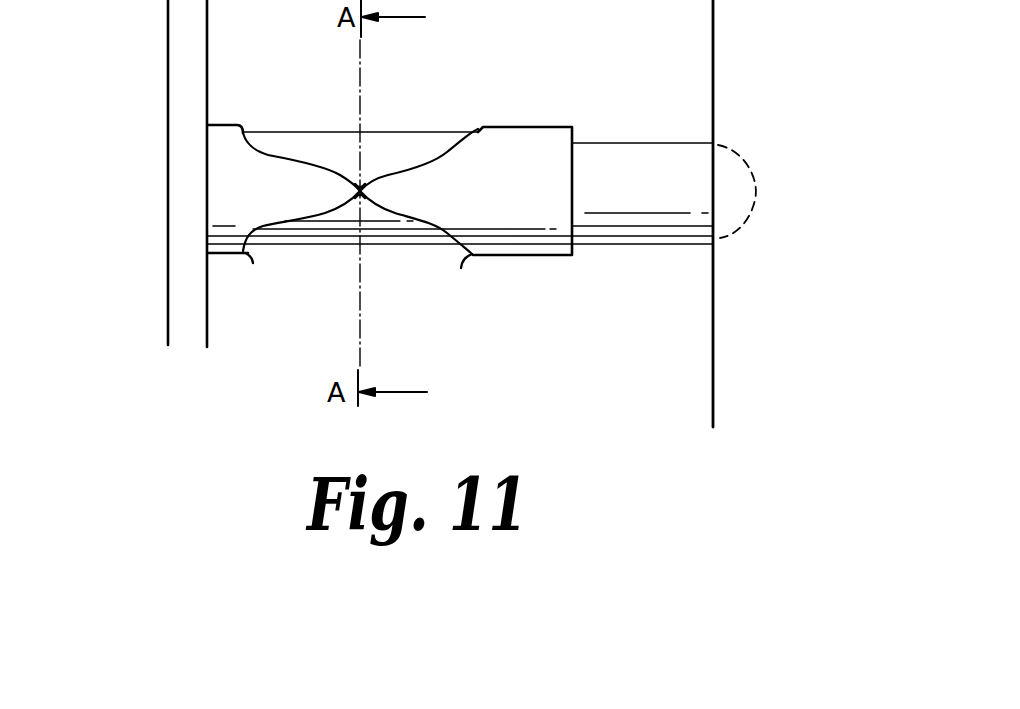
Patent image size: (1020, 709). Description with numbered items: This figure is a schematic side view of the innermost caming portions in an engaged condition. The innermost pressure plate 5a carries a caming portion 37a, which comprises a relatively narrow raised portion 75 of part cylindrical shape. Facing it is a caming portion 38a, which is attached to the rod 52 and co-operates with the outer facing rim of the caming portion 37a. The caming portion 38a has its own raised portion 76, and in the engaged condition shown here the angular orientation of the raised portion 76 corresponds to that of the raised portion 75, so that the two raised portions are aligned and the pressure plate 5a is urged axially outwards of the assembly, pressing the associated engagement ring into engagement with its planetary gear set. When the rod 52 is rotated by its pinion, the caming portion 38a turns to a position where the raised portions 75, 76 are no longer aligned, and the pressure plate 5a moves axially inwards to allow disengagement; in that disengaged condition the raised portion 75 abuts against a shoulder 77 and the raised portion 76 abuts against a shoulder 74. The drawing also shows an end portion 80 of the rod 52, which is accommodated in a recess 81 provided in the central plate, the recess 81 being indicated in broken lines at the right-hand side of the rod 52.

The innermost pressure plate 5a is at (181, 306).
The caming portion 37a is at (257, 178).
The rod 52 is at (370, 153).
The raised portion 76 is at (427, 173).
The raised portion 75 is at (327, 190).
The caming portion 38a is at (417, 198).
The shoulder 74 is at (253, 263).
The shoulder 77 is at (461, 268).
The end portion 80 is at (625, 177).
The recess 81 is at (740, 152).